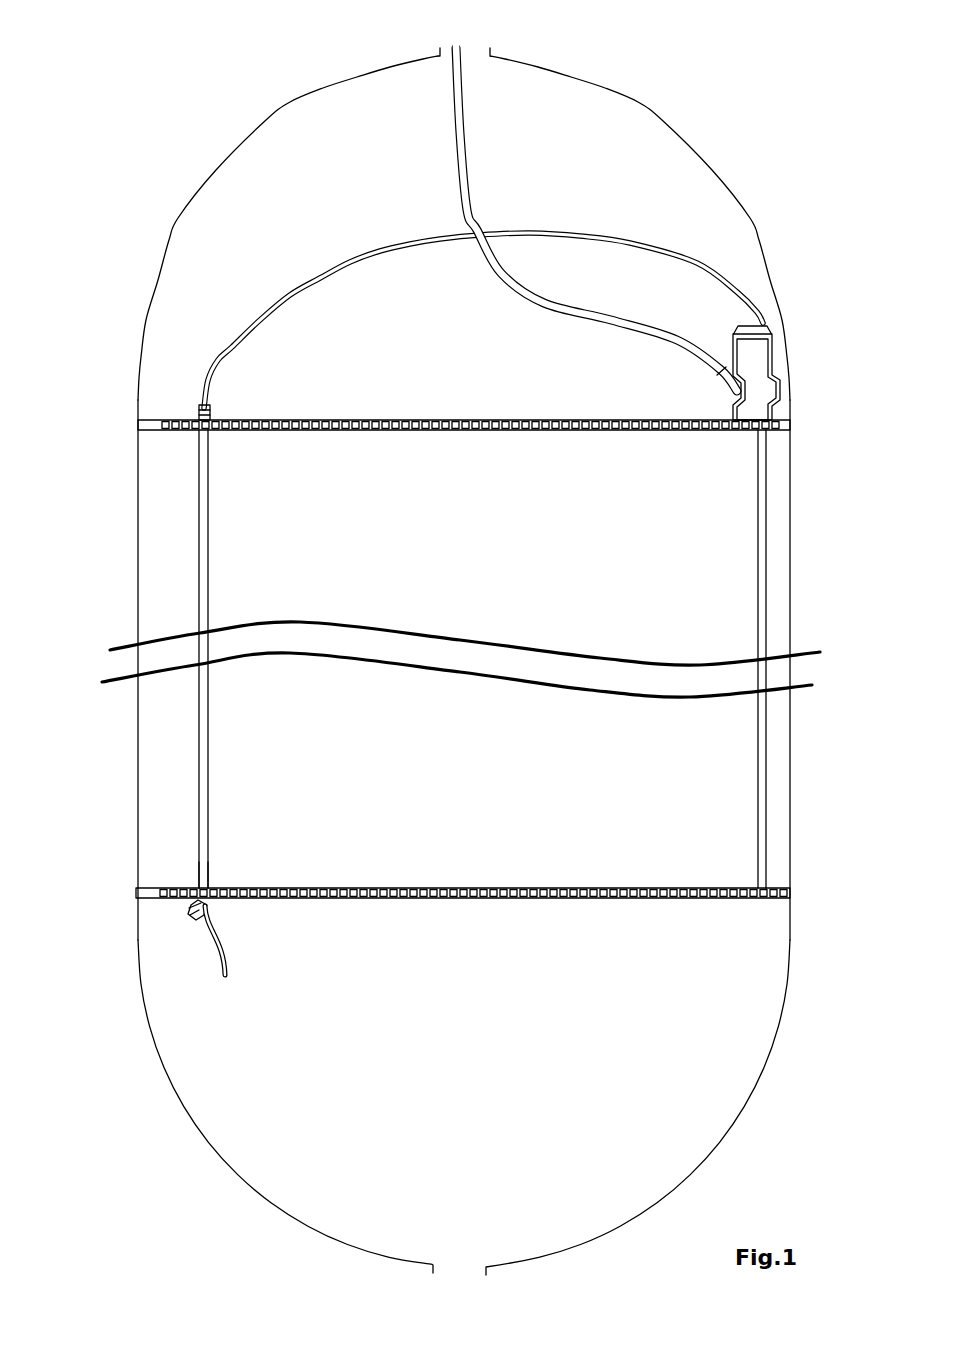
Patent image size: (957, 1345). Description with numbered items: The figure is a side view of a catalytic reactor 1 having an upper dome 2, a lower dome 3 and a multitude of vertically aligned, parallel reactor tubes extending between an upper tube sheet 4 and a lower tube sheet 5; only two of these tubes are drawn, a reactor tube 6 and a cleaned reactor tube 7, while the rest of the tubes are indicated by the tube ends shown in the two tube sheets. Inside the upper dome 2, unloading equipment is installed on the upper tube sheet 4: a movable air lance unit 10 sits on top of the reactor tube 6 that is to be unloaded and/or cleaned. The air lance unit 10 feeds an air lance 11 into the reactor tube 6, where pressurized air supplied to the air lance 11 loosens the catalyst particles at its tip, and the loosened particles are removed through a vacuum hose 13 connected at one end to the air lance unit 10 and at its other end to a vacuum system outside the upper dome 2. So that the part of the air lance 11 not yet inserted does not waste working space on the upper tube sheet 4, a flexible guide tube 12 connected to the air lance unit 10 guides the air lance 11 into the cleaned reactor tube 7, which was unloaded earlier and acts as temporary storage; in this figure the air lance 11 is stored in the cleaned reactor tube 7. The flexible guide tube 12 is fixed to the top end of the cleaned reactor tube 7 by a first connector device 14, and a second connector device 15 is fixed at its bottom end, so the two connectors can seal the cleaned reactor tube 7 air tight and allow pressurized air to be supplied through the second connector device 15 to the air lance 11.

The catalytic reactor 1 is at (461, 476).
The upper dome 2 is at (697, 165).
The lower dome 3 is at (247, 1168).
The upper tube sheet 4 is at (134, 426).
The lower tube sheet 5 is at (794, 897).
The reactor tube 6 is at (765, 610).
The cleaned reactor tube 7 is at (207, 562).
The air lance unit 10 is at (757, 390).
The air lance 11 is at (207, 862).
The flexible guide tube 12 is at (530, 233).
The vacuum hose 13 is at (458, 93).
The first connector device 14 is at (190, 410).
The second connector device 15 is at (170, 915).